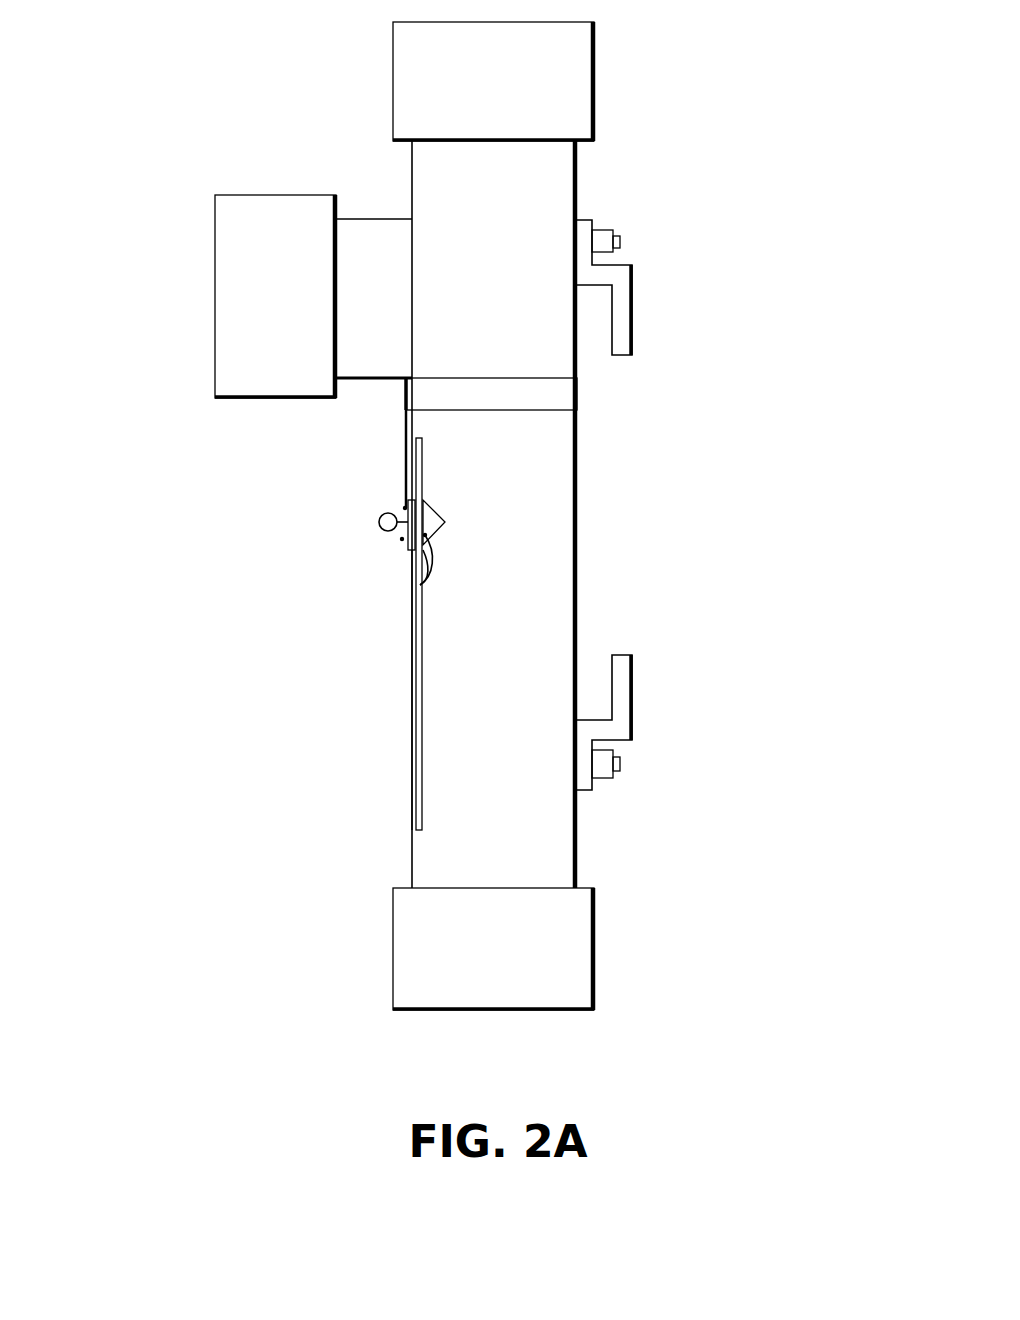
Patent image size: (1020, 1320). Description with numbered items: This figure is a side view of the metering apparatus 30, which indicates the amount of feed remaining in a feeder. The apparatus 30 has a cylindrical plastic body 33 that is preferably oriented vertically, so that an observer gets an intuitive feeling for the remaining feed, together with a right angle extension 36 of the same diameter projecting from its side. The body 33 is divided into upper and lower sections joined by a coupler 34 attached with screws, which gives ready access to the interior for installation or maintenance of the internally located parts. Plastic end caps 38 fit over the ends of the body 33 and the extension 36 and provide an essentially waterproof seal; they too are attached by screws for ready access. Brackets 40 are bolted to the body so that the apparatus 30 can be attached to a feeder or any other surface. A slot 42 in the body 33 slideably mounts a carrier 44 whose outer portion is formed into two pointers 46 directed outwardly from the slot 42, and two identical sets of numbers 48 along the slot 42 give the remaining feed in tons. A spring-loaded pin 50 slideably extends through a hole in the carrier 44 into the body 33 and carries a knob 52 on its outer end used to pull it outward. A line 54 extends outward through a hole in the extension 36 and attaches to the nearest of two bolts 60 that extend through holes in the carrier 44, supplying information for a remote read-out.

The metering apparatus 30 is at (685, 568).
The body 33 is at (603, 494).
The coupler 34 is at (604, 396).
The right angle extension 36 is at (360, 192).
The end caps 38 is at (622, 61).
The brackets 40 is at (668, 314).
The slot 42 is at (412, 676).
The carrier 44 is at (423, 550).
The pointers 46 is at (447, 520).
The sets of numbers 48 is at (450, 750).
The pin 50 is at (378, 553).
The knob 52 is at (355, 523).
The line 54 is at (385, 445).
The bolts 60 is at (380, 496).